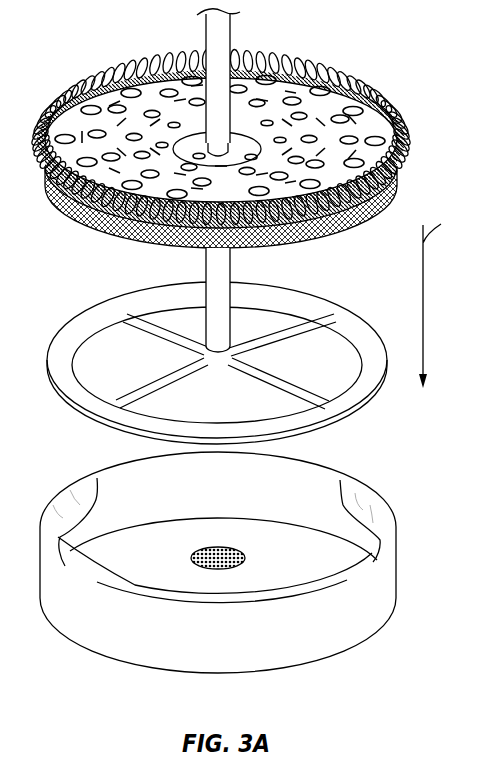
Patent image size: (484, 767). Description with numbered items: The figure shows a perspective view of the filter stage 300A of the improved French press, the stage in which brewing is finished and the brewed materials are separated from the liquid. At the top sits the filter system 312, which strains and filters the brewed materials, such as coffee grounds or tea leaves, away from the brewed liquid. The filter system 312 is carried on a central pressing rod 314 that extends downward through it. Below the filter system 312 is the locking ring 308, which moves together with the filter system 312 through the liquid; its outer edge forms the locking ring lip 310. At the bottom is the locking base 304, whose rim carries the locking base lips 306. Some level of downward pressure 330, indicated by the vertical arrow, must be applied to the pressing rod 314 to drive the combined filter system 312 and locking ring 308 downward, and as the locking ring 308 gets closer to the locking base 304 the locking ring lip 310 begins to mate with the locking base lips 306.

The filter stage 300A is at (125, 38).
The locking base 304 is at (312, 647).
The locking base lip 306 is at (85, 488).
The locking ring 308 is at (296, 345).
The locking ring lip 310 is at (116, 288).
The filter system 312 is at (316, 58).
The pressing rod 314 is at (232, 275).
The downward pressure 330 is at (441, 290).